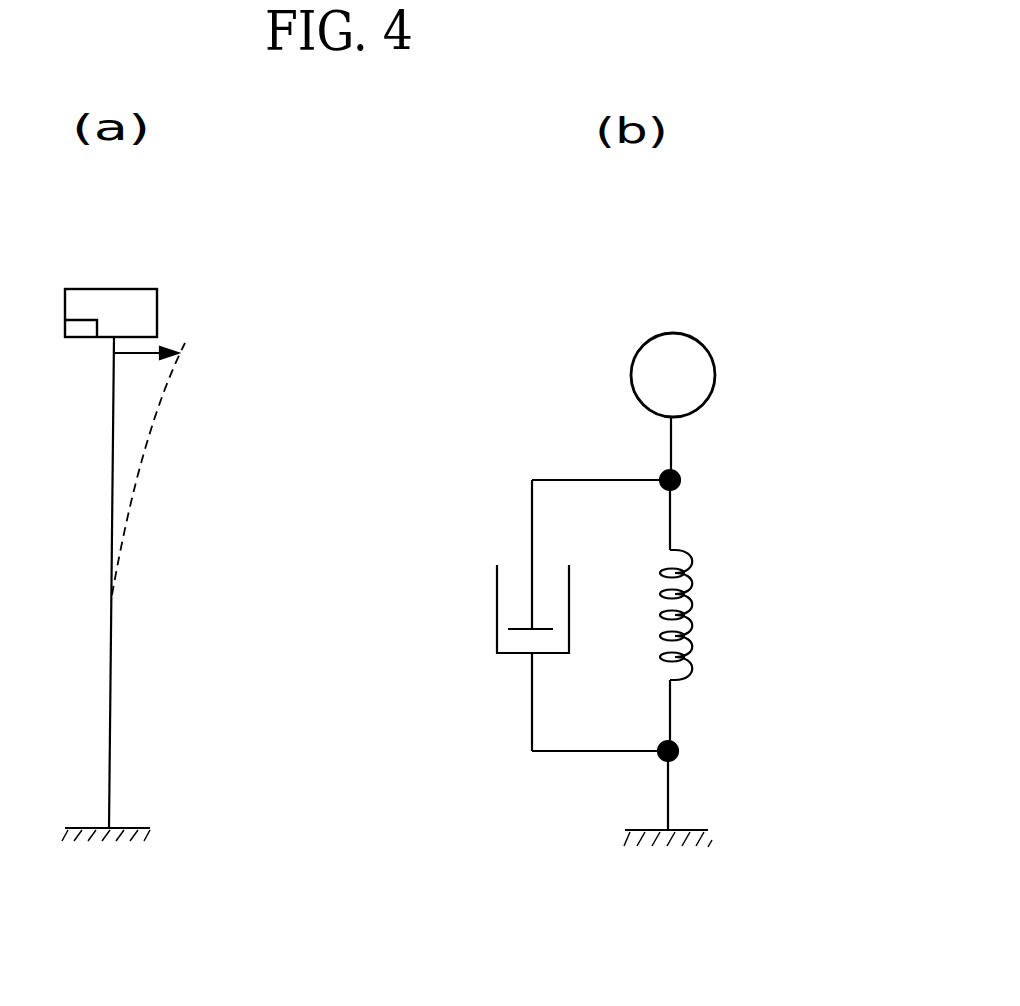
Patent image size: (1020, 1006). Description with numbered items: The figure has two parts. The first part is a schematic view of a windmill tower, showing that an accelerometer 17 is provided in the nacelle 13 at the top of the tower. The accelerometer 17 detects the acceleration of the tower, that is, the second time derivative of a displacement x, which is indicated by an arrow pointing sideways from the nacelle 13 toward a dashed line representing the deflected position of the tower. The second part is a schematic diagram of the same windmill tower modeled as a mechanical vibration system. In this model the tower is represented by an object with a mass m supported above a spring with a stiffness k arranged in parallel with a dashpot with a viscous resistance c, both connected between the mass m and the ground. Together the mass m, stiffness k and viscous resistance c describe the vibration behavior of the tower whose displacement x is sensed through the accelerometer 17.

The nacelle 13 is at (118, 289).
The accelerometer 17 is at (75, 337).
The displacement x is at (146, 370).
The mass m is at (735, 375).
The viscous resistance c is at (418, 609).
The stiffness k is at (781, 615).